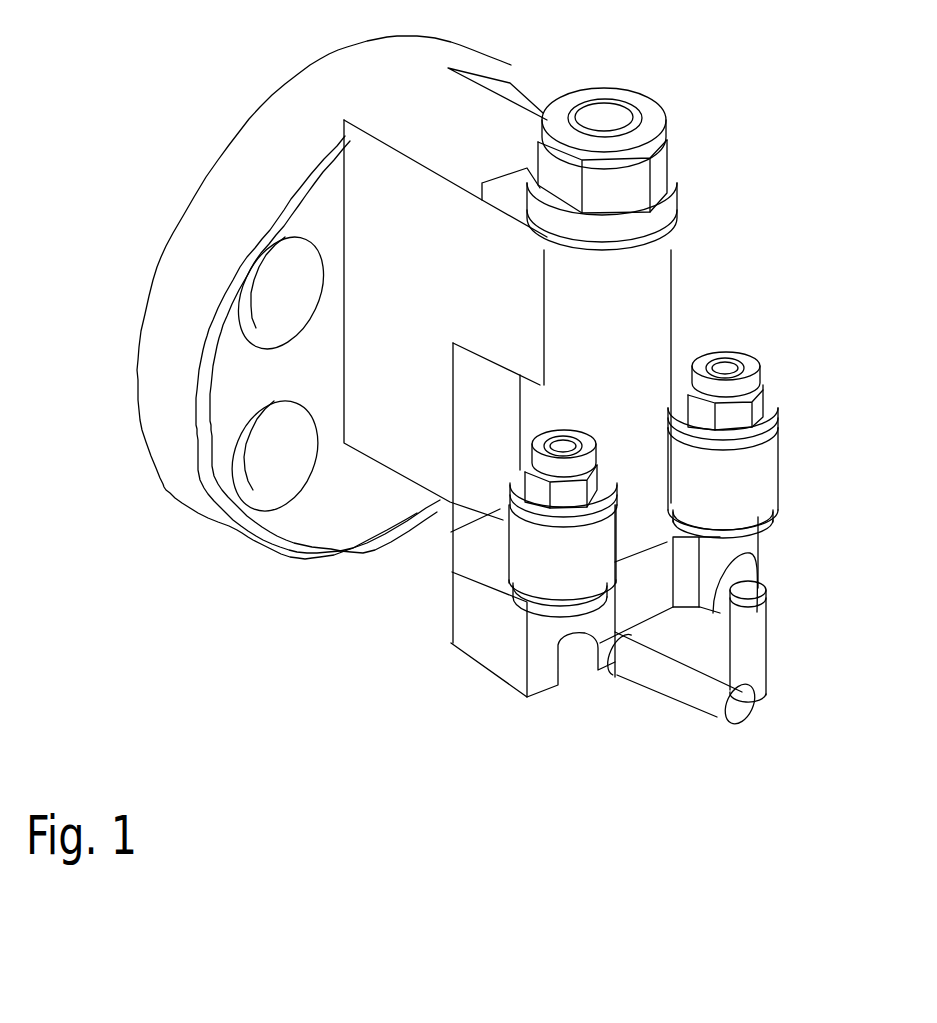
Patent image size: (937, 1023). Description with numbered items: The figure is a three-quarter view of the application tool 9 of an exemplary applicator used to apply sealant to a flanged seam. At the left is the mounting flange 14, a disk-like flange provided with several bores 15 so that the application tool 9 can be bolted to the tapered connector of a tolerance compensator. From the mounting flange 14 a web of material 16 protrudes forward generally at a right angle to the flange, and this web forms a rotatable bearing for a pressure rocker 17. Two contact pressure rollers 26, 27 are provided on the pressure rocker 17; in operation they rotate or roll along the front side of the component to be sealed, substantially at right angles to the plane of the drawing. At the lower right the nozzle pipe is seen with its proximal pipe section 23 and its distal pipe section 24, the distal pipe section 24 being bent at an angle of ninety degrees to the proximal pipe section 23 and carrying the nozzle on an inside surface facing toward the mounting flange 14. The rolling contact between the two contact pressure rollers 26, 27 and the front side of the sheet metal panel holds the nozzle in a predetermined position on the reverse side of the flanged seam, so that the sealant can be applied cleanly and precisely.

The application tool 9 is at (182, 126).
The mounting flange 14 is at (160, 297).
The bores 15 is at (265, 490).
The web of material 16 is at (457, 133).
The pressure rocker 17 is at (505, 647).
The proximal pipe section 23 is at (678, 682).
The distal pipe section 24 is at (752, 645).
The contact pressure roller 26 is at (548, 558).
The contact pressure roller 27 is at (740, 485).